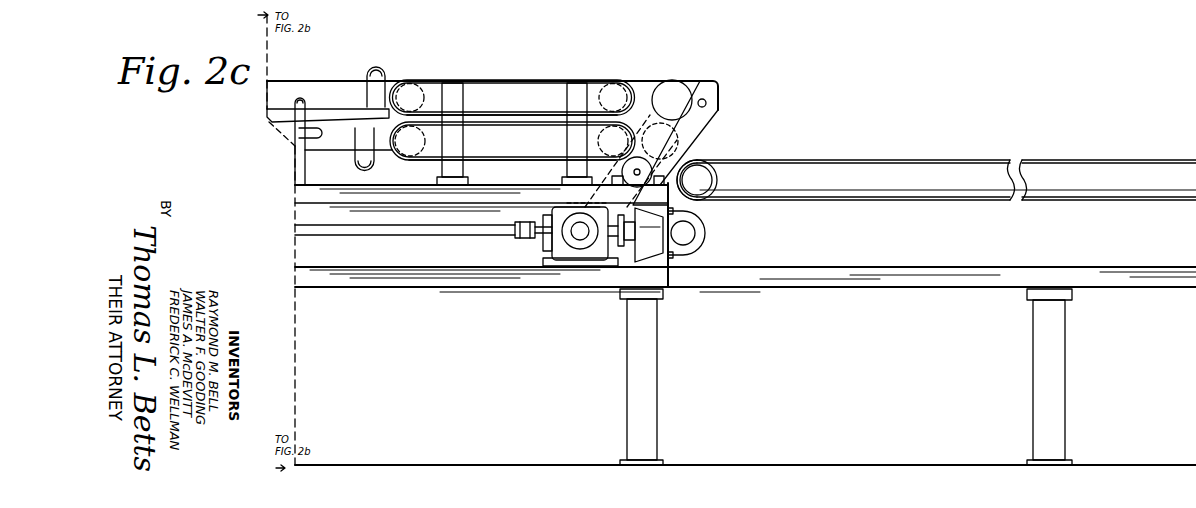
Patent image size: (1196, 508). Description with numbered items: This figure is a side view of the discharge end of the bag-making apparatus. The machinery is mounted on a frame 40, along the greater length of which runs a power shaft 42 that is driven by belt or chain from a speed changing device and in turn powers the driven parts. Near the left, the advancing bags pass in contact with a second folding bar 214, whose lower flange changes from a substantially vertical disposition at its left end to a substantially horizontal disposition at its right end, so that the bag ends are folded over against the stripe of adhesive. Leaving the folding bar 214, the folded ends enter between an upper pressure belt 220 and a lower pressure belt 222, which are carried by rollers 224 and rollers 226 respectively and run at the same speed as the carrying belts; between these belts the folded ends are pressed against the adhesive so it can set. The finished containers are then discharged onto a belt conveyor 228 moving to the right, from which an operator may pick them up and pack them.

The frame 40 is at (706, 281).
The power shaft 42 is at (462, 228).
The second folding bar 214 is at (318, 116).
The pressure belt 220 is at (495, 117).
The pressure belt 222 is at (478, 161).
The rollers 224 is at (412, 79).
The rollers 226 is at (413, 161).
The belt conveyor 228 is at (796, 162).